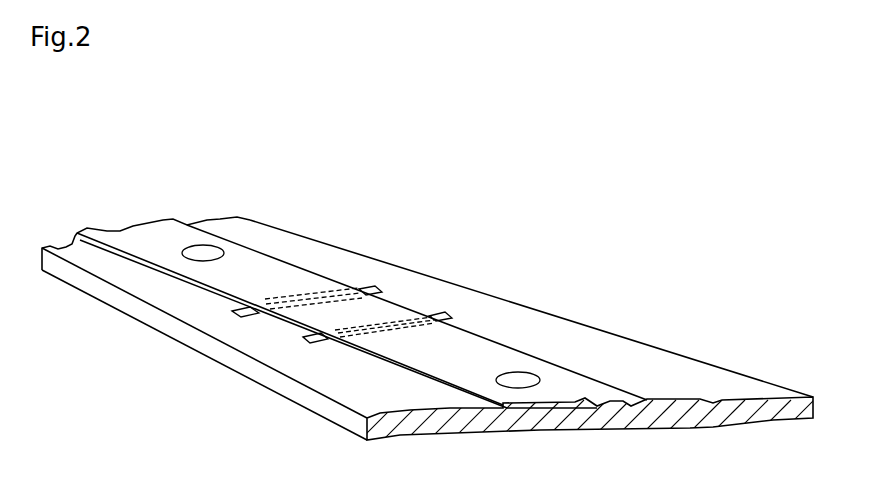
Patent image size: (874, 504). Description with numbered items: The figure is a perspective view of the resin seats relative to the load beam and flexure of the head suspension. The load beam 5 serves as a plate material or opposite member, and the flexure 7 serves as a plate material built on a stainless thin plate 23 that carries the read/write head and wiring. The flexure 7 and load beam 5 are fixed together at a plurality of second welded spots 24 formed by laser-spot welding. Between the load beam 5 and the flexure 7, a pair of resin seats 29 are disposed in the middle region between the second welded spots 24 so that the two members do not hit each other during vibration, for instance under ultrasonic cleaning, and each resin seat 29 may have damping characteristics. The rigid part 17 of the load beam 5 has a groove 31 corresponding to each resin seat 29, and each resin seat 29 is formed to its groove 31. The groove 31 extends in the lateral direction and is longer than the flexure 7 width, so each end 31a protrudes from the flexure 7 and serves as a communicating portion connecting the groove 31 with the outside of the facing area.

The load beam 5 is at (549, 311).
The flexure 7 is at (262, 245).
The rigid part 17 is at (633, 360).
The stainless thin plate 23 is at (496, 312).
The second welded spots 24 is at (205, 245).
The resin seats 29 is at (309, 292).
The groove 31 is at (368, 288).
The end 31a is at (377, 287).